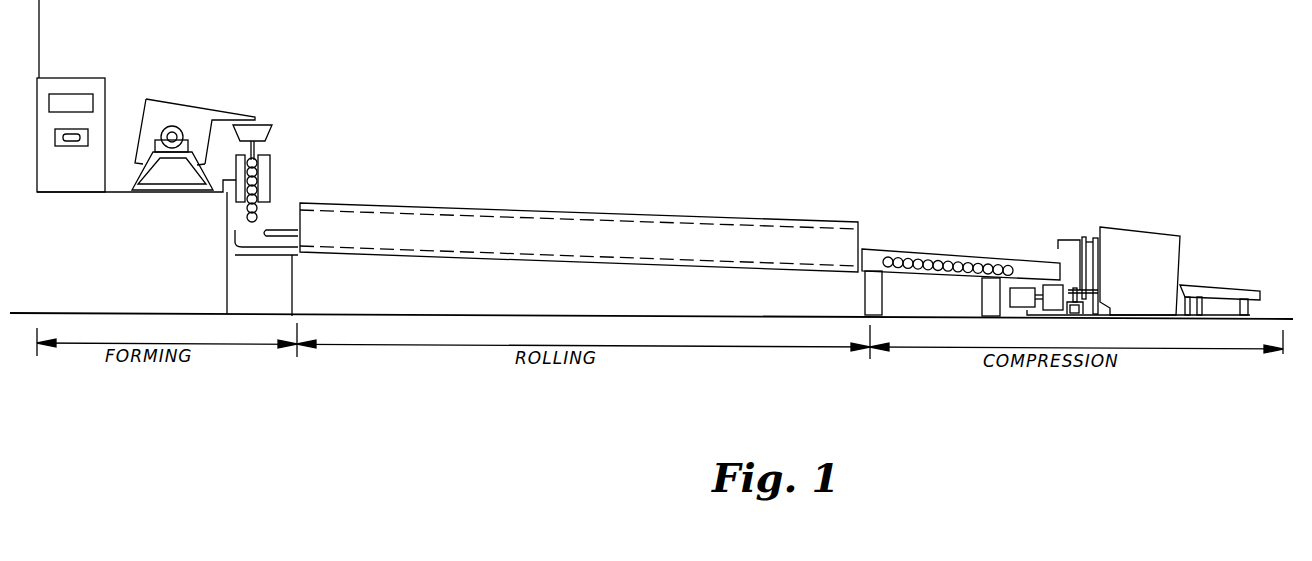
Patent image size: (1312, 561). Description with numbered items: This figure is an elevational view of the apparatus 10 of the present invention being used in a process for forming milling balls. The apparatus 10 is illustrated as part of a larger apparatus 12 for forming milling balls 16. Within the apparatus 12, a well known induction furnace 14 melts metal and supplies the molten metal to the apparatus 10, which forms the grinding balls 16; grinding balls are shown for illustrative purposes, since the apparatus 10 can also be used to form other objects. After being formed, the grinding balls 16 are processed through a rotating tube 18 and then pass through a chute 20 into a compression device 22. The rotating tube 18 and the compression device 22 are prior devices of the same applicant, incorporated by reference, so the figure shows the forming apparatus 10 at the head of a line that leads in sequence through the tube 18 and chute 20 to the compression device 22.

The apparatus 10 is at (273, 160).
The apparatus for forming milling balls 12 is at (840, 196).
The induction furnace 14 is at (195, 113).
The grinding balls 16 is at (257, 215).
The rotating tube 18 is at (612, 220).
The chute 20 is at (1022, 263).
The compression device 22 is at (1135, 235).